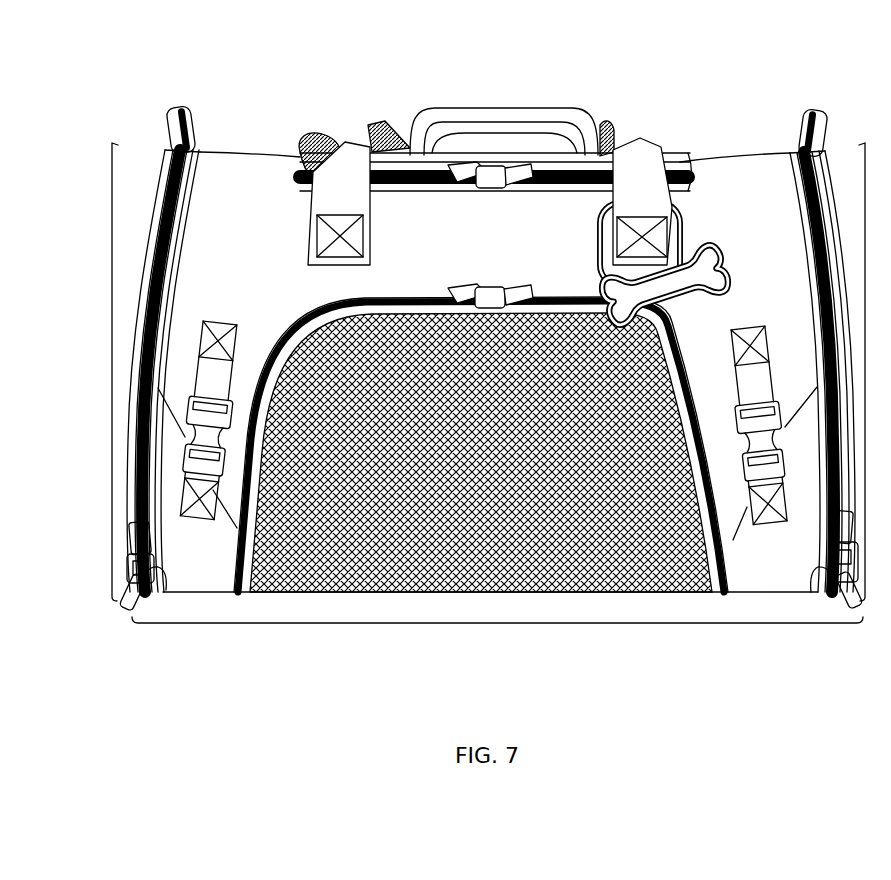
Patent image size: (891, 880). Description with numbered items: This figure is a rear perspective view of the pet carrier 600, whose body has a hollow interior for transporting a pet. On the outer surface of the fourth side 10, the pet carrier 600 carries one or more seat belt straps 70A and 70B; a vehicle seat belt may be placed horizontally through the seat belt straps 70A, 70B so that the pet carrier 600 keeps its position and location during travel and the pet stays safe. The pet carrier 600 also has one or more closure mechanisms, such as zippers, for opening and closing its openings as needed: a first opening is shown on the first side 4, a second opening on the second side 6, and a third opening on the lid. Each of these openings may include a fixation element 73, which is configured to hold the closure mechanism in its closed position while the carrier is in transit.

The pet carrier 600 is at (740, 72).
The fixation element 73 is at (490, 163).
The seat belt strap 70A is at (182, 522).
The seat belt strap 70B is at (775, 507).
The first side 4 is at (112, 363).
The second side 6 is at (865, 363).
The fourth side 10 is at (484, 623).